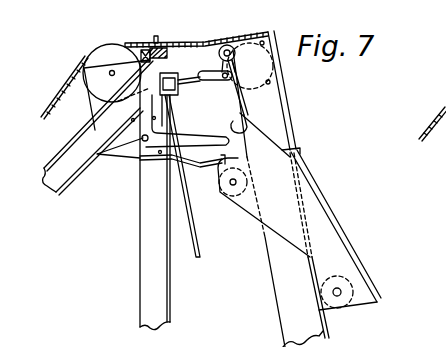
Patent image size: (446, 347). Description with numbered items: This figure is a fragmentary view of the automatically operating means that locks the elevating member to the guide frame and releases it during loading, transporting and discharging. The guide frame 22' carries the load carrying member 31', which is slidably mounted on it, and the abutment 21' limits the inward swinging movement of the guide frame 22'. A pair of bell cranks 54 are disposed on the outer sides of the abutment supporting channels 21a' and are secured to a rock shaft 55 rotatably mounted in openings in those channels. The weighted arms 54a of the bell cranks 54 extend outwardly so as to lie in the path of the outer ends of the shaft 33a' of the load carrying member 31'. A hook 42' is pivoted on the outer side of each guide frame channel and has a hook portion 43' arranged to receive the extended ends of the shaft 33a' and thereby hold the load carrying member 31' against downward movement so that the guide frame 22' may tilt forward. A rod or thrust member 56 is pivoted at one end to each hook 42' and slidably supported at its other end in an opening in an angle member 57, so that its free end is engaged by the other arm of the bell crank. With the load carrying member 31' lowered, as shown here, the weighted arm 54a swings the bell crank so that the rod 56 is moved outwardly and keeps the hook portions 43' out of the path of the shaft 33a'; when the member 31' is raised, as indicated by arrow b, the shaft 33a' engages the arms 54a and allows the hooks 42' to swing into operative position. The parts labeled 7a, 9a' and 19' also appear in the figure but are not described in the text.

The abutment 21' is at (196, 32).
The hook 42' is at (261, 87).
The pivot 7a is at (288, 34).
The rod 9a' is at (64, 87).
The angle member 57 is at (175, 137).
The rod or thrust member 56 is at (216, 49).
The hook portion 43' is at (272, 96).
The bell cranks 54 is at (113, 126).
The rock shaft 55 is at (118, 157).
The weighted arms 54a is at (210, 138).
The abutment supporting channels 21a' is at (132, 196).
The shaft 33a' is at (225, 206).
The guide frame 22' is at (312, 247).
The load carrying member 31' is at (336, 226).
The rod 19' is at (432, 112).
The arrow b is at (122, 125).